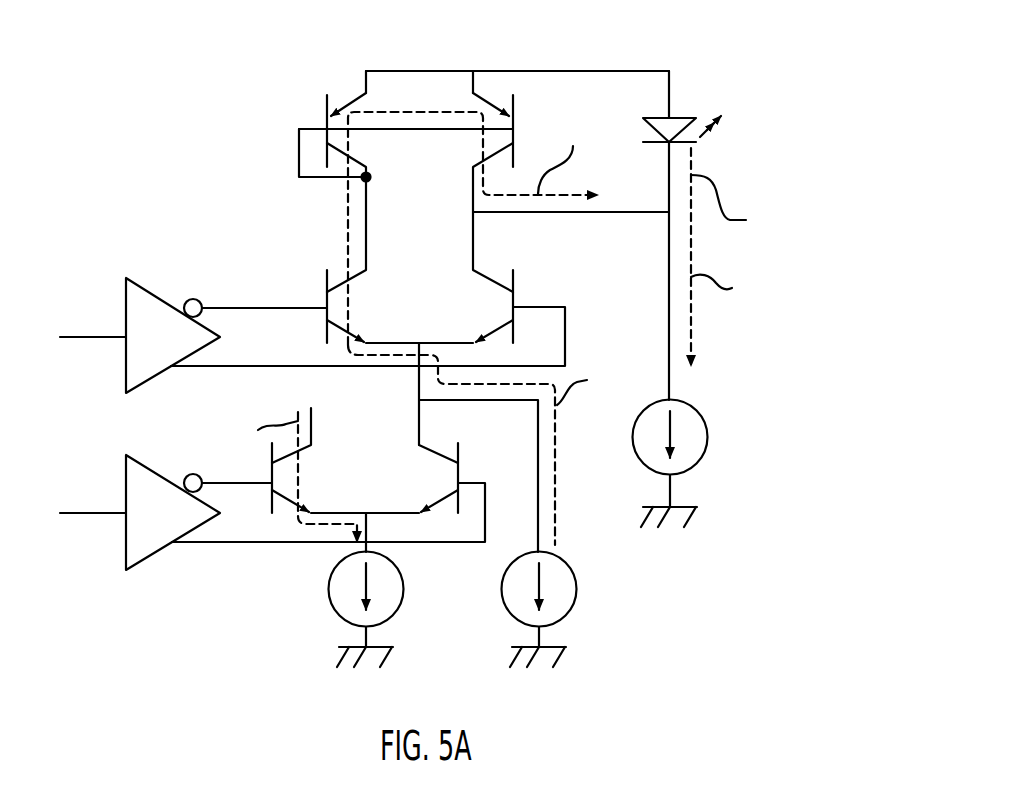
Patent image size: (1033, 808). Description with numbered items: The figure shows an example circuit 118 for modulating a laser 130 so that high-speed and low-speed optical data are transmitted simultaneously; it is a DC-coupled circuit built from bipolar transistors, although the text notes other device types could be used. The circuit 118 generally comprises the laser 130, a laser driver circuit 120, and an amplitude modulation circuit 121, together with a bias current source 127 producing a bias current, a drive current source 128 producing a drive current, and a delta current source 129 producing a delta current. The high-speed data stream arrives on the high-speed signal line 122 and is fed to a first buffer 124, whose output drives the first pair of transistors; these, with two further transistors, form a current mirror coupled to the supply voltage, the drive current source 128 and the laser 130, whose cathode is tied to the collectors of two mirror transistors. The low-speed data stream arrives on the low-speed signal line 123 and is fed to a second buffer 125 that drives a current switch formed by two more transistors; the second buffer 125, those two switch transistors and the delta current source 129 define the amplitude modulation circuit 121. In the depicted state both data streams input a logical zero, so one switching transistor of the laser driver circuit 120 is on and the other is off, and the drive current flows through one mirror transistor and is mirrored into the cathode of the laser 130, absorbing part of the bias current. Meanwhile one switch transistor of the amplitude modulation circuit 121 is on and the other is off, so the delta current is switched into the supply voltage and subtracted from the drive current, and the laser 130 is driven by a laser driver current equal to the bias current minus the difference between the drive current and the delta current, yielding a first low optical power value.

The circuit 118 is at (148, 73).
The laser driver circuit 120 is at (308, 57).
The amplitude modulation circuit 121 is at (150, 599).
The high-speed signal line 122 is at (75, 337).
The low-speed signal line 123 is at (75, 513).
The first buffer 124 is at (152, 292).
The second buffer 125 is at (148, 460).
The bias current source 127 is at (712, 440).
The drive current source 128 is at (580, 594).
The delta current source 129 is at (407, 594).
The laser 130 is at (700, 96).